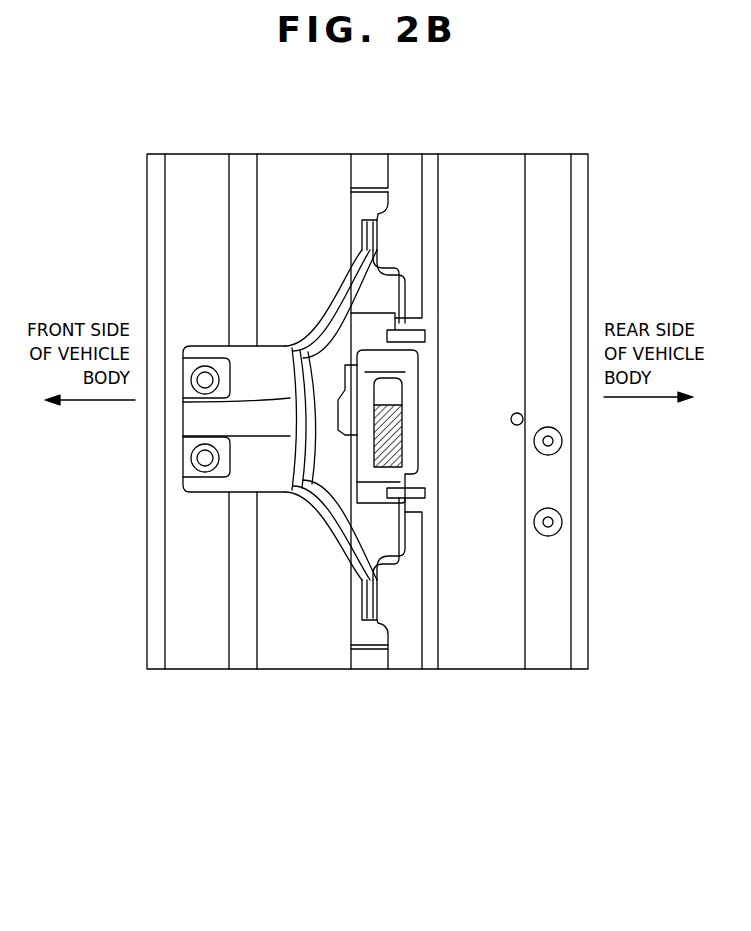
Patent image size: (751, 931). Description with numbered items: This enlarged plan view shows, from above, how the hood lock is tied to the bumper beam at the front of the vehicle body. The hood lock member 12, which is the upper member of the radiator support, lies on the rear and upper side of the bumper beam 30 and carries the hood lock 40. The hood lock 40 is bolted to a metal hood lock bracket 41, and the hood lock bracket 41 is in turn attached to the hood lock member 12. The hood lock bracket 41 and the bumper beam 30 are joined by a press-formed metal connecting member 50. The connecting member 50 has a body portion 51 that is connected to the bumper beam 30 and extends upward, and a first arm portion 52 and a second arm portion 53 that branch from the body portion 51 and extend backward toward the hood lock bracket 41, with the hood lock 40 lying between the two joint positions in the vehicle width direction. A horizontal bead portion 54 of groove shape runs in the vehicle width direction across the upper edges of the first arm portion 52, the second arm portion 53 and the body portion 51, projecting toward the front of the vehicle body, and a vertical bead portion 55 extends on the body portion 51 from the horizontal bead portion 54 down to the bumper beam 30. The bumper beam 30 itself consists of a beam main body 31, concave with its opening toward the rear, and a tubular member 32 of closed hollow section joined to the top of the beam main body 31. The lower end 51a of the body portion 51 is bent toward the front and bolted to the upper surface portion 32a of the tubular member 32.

The hood lock member 12 is at (556, 228).
The bumper beam 30 is at (277, 765).
The beam main body 31 is at (242, 653).
The tubular member 32 is at (203, 653).
The upper surface portion of the tubular member 32a is at (187, 233).
The hood lock 40 is at (403, 455).
The hood lock bracket 41 is at (420, 421).
The connecting member 50 is at (172, 474).
The body portion 51 is at (243, 373).
The lower end of the body portion 51a is at (201, 378).
The first arm portion 52 is at (350, 305).
The second arm portion 53 is at (367, 642).
The horizontal bead portion 54 is at (297, 470).
The vertical bead portion 55 is at (243, 415).